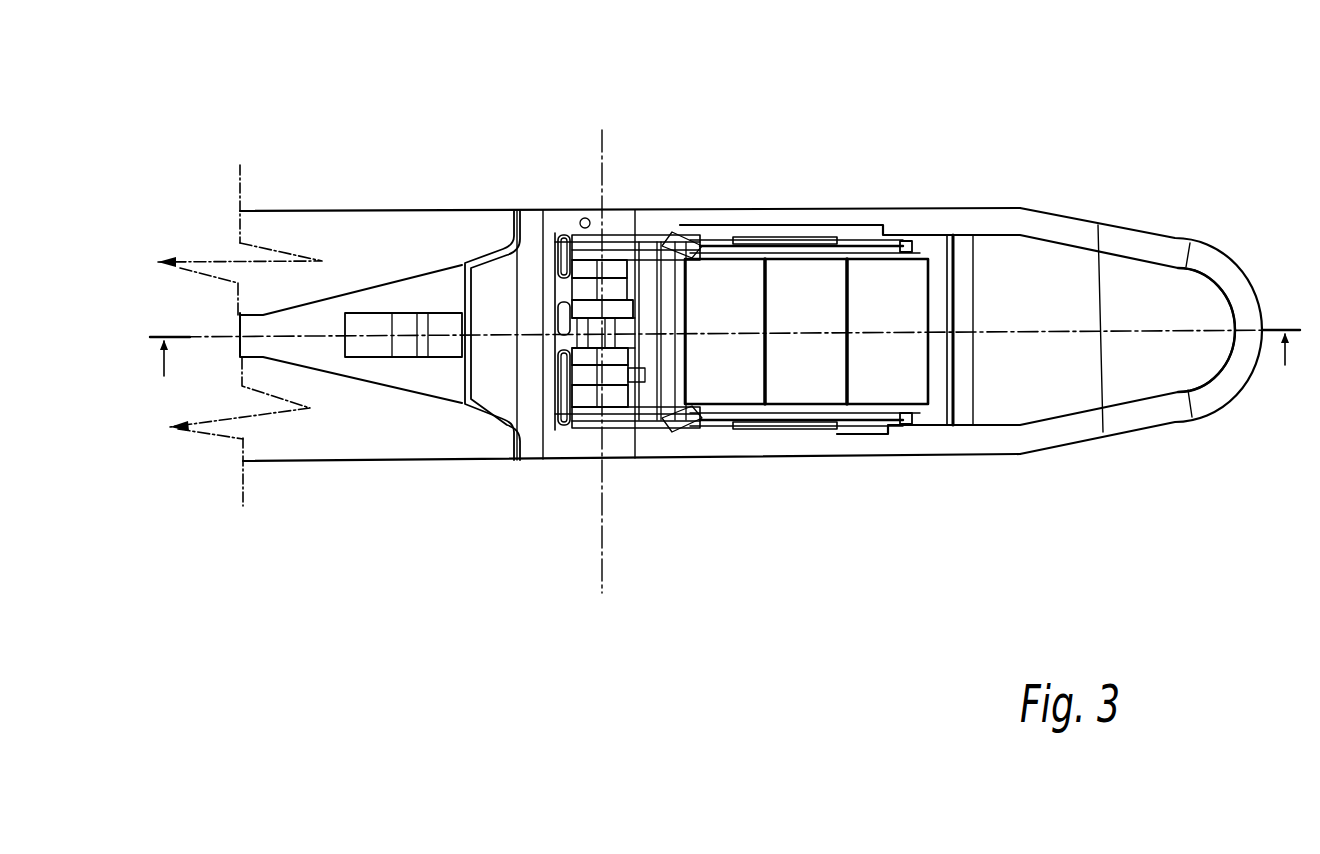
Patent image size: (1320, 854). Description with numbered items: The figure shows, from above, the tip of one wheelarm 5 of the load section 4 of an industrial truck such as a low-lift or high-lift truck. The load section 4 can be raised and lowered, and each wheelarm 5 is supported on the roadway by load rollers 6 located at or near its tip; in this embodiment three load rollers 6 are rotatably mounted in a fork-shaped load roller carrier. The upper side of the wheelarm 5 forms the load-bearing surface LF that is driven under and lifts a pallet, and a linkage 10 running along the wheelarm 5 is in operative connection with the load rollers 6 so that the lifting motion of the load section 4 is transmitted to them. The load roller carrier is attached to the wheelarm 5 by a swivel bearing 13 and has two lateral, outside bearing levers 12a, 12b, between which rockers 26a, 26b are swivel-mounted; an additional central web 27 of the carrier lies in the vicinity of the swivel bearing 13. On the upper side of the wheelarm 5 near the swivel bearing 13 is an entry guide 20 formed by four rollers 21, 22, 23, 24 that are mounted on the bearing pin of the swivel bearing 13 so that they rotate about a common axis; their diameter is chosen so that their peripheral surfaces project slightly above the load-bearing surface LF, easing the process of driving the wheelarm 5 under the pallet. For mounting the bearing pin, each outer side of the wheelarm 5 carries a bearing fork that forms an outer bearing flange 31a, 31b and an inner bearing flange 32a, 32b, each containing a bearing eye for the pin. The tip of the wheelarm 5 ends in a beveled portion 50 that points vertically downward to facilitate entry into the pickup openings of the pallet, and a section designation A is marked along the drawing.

The load section 4 is at (1133, 172).
The wheelarm 5 is at (268, 228).
The load rollers 6 is at (880, 290).
The linkage 10 is at (355, 320).
The bearing lever 12a is at (732, 292).
The bearing lever 12b is at (827, 430).
The swivel bearing 13 is at (596, 150).
The entry guide 20 is at (540, 252).
The roller 21 is at (585, 268).
The roller 22 is at (617, 308).
The roller 23 is at (580, 355).
The roller 24 is at (585, 397).
The rocker 26a is at (903, 247).
The rocker 26b is at (910, 415).
The central web 27 is at (625, 332).
The outer bearing flange 31a is at (596, 268).
The outer bearing flange 31b is at (615, 448).
The inner bearing flange 32a is at (585, 288).
The inner bearing flange 32b is at (615, 377).
The beveled portion 50 is at (1202, 292).
The section line A is at (702, 362).
The load-bearing surface LF is at (288, 446).